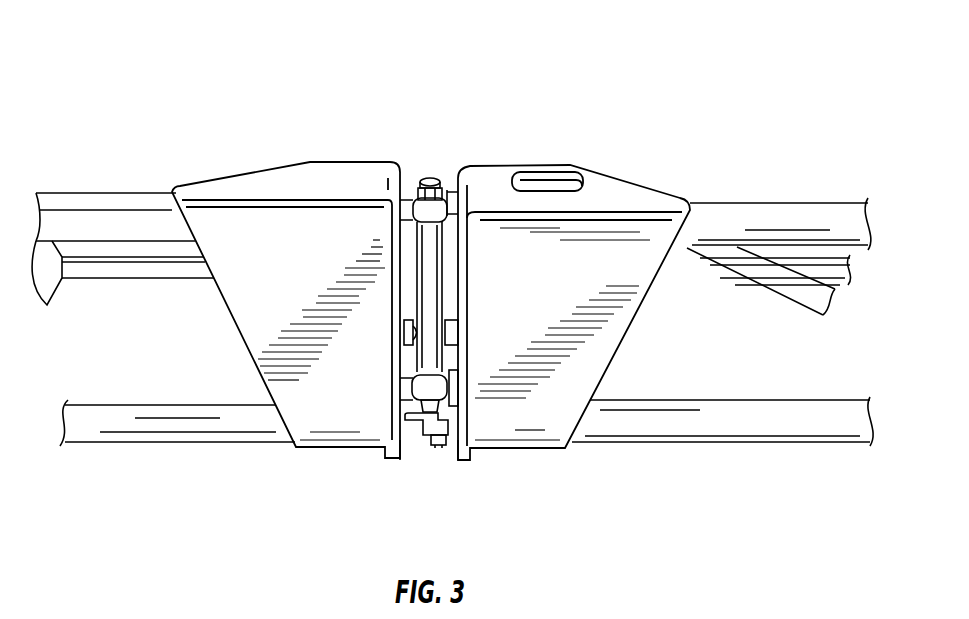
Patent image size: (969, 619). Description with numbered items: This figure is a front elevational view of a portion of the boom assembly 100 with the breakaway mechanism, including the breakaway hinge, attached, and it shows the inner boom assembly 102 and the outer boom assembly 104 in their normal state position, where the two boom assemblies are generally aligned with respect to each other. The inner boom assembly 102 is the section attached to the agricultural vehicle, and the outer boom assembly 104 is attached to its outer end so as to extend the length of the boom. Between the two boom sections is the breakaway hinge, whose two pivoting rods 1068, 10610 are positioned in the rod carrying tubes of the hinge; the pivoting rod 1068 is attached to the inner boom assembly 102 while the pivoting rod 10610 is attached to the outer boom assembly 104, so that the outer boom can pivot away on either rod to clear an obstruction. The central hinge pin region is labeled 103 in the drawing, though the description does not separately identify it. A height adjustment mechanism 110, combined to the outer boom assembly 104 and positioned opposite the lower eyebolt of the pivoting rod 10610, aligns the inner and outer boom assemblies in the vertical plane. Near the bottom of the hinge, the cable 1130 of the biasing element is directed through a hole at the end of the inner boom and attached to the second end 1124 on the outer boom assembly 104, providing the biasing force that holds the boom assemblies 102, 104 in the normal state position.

The boom assembly 100 is at (416, 68).
The inner boom assembly 102 is at (262, 165).
The outer boom assembly 104 is at (620, 192).
The hinge pin 103 is at (452, 283).
The pivoting rod 1068 is at (431, 180).
The height adjustment mechanism 110 is at (458, 388).
The pivoting rod 10610 is at (420, 404).
The cable 1130 is at (418, 444).
The second end 1124 is at (444, 440).